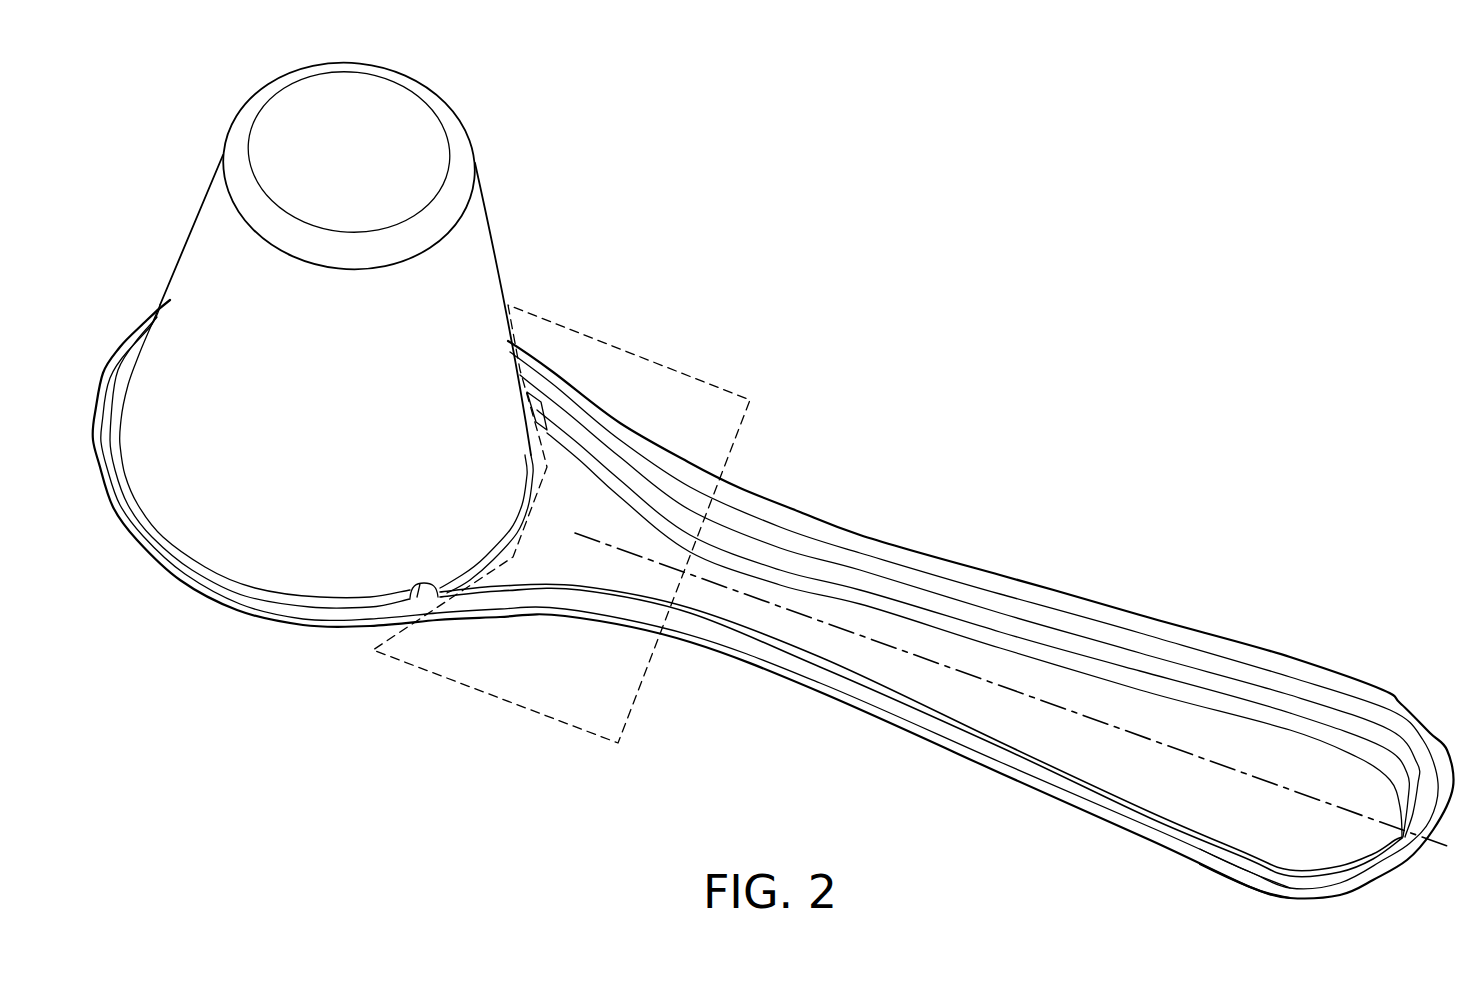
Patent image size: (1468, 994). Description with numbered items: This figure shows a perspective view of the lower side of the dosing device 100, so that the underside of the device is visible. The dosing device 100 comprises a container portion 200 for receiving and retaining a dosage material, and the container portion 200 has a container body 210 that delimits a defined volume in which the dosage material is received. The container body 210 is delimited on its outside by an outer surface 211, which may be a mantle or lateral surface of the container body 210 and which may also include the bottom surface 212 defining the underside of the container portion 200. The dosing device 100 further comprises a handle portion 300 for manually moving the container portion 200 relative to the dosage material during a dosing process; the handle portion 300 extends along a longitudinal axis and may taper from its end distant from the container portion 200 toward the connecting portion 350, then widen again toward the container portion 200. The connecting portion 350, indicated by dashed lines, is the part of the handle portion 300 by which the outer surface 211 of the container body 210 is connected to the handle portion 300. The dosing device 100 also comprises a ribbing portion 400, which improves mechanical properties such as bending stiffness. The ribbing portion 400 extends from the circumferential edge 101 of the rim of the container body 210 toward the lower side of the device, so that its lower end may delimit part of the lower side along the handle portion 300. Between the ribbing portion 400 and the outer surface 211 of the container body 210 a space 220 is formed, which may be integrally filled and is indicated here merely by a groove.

The dosing device 100 is at (1181, 203).
The circumferential edge 101 is at (1310, 745).
The container portion 200 is at (174, 602).
The container body 210 is at (300, 578).
The outer surface 211 is at (483, 243).
The bottom surface 212 is at (278, 127).
The space 220 is at (547, 432).
The handle portion 300 is at (1121, 698).
The connecting portion 350 is at (684, 364).
The ribbing portion 400 is at (123, 357).